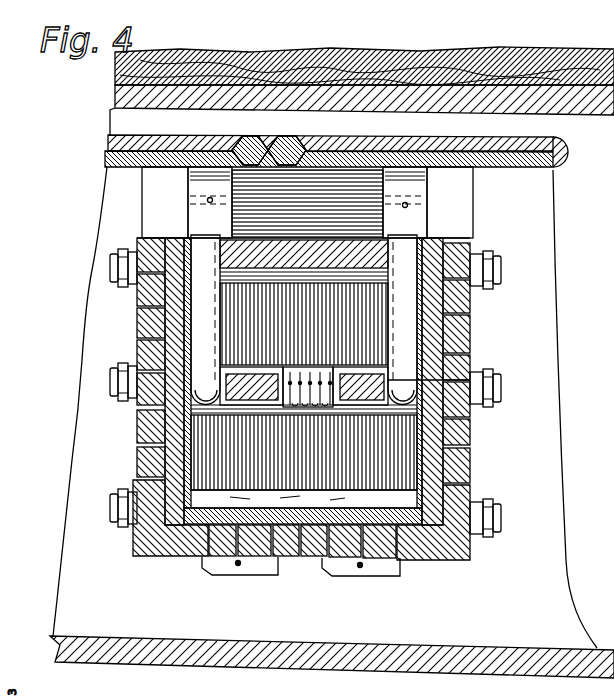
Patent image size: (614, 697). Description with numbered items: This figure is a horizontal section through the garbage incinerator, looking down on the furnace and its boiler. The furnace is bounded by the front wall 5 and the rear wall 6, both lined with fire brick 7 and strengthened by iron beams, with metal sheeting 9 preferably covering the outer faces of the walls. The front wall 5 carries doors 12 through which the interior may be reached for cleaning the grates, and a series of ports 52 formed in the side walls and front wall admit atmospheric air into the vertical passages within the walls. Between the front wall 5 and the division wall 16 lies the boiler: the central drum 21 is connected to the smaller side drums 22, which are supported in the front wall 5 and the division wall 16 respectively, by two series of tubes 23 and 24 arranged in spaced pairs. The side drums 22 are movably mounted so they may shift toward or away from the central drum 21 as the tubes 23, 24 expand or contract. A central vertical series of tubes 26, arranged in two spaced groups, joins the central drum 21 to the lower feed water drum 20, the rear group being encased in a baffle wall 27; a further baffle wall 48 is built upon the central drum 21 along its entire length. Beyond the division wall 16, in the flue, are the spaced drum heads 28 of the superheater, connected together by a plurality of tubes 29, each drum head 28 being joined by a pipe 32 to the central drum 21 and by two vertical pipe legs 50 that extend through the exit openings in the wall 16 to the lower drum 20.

The metal sheeting 9 is at (182, 135).
The fire brick 7 is at (322, 162).
The tubes 29 is at (340, 210).
The rear wall 6 is at (275, 152).
The drum heads 28 is at (187, 186).
The vertical pipe legs 50 is at (207, 200).
The division wall 16 is at (258, 252).
The ports 52 is at (140, 362).
The front wall 5 is at (307, 558).
The central drum 21 is at (150, 414).
The pipe 32 is at (197, 300).
The tubes 24 is at (243, 338).
The lower feed water drum 20 is at (217, 413).
The baffle wall 48 is at (301, 384).
The baffle wall 27 is at (377, 378).
The central vertical series of tubes 26 is at (308, 397).
The tubes 23 is at (387, 377).
The side drums 22 is at (137, 279).
The doors 12 is at (238, 569).